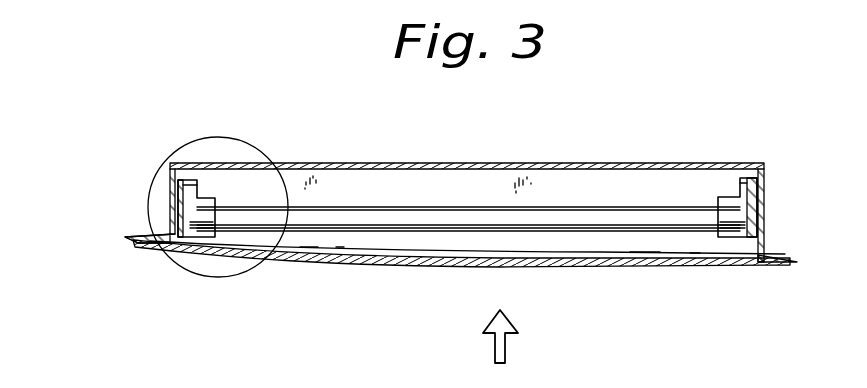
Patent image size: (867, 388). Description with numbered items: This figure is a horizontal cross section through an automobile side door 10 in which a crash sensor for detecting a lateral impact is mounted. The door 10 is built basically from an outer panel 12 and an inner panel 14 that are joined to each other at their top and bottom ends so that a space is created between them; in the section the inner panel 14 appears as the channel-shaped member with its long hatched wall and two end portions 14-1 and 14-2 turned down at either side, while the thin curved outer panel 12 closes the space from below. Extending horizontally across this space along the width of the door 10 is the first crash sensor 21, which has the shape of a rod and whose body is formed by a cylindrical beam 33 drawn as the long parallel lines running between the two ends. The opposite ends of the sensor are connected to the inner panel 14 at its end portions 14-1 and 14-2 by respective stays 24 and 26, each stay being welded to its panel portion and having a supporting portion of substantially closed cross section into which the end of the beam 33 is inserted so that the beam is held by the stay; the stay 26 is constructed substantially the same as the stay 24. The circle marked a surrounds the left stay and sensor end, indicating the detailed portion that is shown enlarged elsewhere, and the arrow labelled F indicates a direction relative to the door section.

The side door 10 is at (710, 148).
The outer panel 12 is at (450, 268).
The inner panel 14 is at (613, 163).
The end portion of inner panel 14-1 is at (767, 217).
The end portion of inner panel 14-2 is at (170, 189).
The first crash sensor 21 is at (408, 238).
The stay 24 is at (203, 208).
The stay 26 is at (730, 236).
The beam 33 is at (592, 217).
The circled detailed portion a is at (202, 277).
The light emitting direction F is at (505, 350).